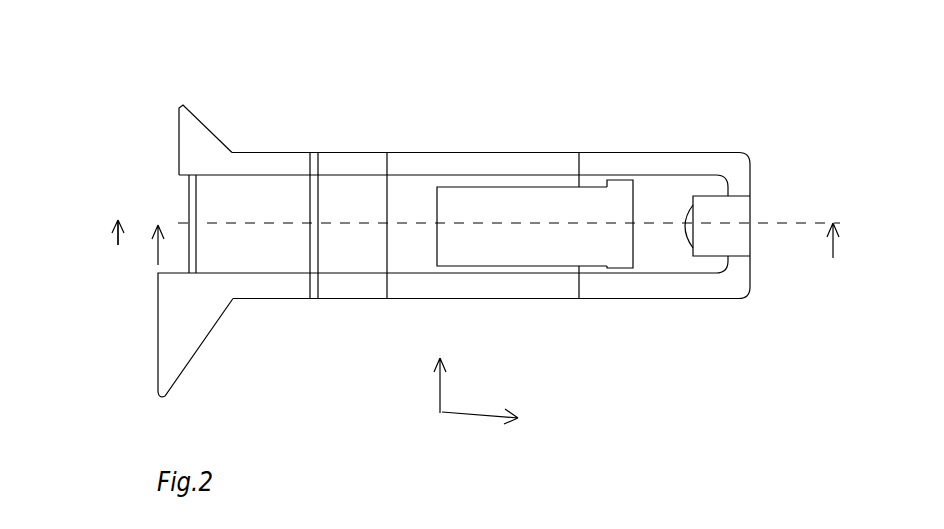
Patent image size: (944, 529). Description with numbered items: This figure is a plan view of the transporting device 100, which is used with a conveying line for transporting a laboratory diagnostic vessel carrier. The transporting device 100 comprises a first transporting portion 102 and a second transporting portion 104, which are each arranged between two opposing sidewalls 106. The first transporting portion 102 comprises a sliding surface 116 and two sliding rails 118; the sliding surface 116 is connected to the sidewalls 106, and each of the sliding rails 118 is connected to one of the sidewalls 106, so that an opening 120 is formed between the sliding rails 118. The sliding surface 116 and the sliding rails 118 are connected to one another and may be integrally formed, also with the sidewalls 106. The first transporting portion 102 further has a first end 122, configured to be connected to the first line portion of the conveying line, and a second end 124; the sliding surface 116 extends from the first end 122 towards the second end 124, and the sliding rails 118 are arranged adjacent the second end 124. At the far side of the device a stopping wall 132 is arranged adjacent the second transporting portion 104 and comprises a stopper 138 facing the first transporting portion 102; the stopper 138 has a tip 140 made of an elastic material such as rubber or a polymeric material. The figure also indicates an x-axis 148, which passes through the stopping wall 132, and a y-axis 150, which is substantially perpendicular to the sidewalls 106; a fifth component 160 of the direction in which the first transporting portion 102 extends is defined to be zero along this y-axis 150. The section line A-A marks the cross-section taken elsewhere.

The transporting device 100 is at (679, 67).
The first transporting portion 102 is at (305, 200).
The second transporting portion 104 is at (640, 254).
The sidewalls 106 is at (518, 150).
The sliding surface 116 is at (386, 195).
The sliding rails 118 is at (559, 185).
The opening 120 is at (480, 212).
The first end 122 is at (187, 212).
The second end 124 is at (612, 182).
The stopping wall 132 is at (739, 267).
The stopper 138 is at (737, 210).
The tip 140 is at (682, 220).
The x-axis 148 is at (477, 418).
The y-axis 150 is at (435, 397).
The fifth component 160 is at (112, 240).